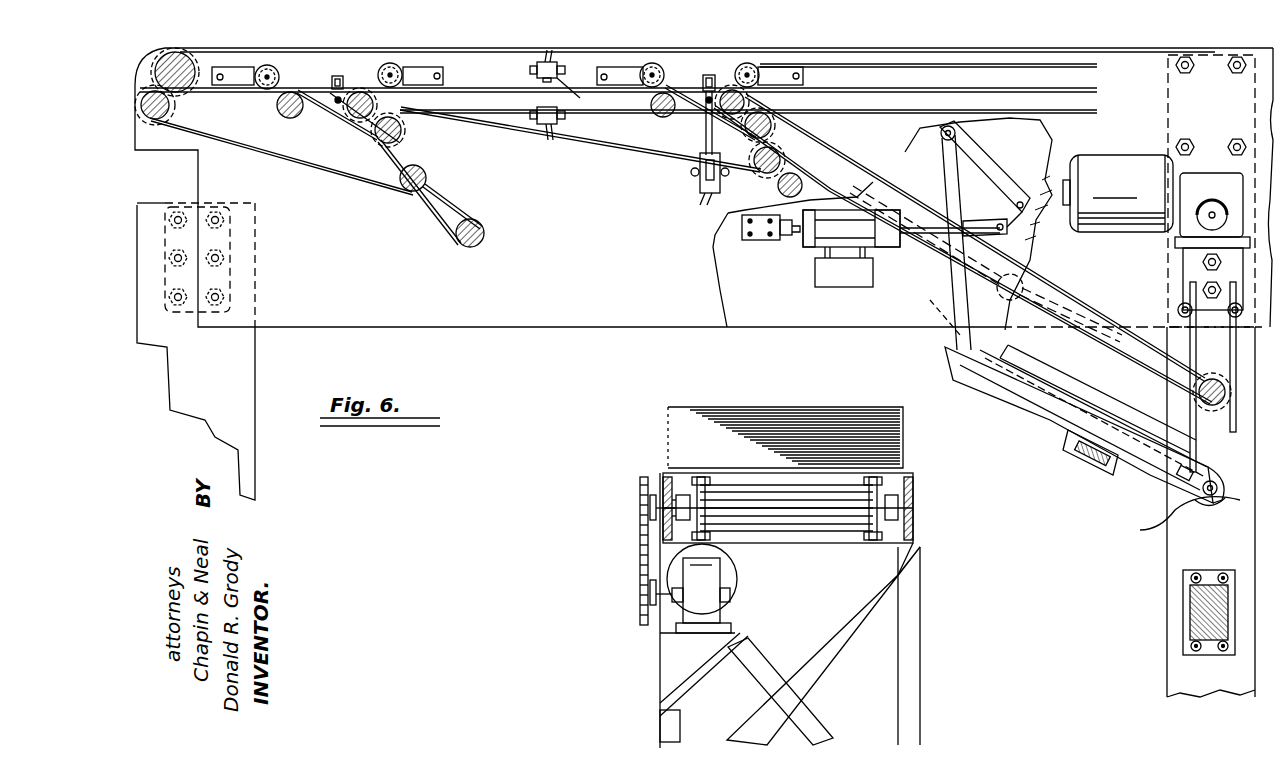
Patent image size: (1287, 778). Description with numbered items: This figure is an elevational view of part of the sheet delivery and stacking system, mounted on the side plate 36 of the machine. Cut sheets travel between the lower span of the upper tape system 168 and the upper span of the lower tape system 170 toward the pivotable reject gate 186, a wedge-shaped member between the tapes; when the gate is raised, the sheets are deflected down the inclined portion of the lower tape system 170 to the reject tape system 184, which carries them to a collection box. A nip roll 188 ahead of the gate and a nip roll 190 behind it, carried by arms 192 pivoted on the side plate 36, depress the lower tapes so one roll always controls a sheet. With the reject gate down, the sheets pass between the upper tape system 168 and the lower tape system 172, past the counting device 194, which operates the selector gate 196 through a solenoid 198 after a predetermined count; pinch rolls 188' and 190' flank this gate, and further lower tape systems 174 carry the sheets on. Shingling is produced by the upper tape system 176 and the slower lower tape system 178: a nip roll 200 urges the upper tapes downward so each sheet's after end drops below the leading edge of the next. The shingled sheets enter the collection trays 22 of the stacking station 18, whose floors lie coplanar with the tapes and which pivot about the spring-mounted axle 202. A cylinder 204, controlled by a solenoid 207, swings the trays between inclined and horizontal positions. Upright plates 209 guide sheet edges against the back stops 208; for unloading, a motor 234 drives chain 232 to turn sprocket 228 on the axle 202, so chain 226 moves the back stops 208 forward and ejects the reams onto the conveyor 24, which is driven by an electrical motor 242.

The delivery tray assembly 18 is at (1115, 512).
The collection trays 22 is at (1220, 425).
The conveyor 24 is at (615, 503).
The side plate 36 is at (567, 273).
The upper tape system 168 is at (497, 72).
The lower tape system 170 is at (345, 158).
The lower tape system 172 is at (518, 124).
The lower tape system 174 is at (862, 98).
The upper tape system 176 is at (1058, 290).
The lower tape system 178 is at (945, 283).
The reject tape system 184 is at (462, 217).
The reject gate 186 is at (325, 98).
The nip roll 188 is at (291, 50).
The pinch roll 188' is at (658, 48).
The nip roll 190 is at (404, 49).
The pinch roll 190' is at (782, 48).
The arms 192 is at (252, 68).
The counting device 194 is at (579, 95).
The selector gate 196 is at (695, 90).
The solenoid 198 is at (699, 186).
The nip roll 200 is at (880, 212).
The axle 202 is at (1218, 495).
The cylinder 204 is at (803, 248).
The solenoid 207 is at (835, 287).
The back stops 208 is at (1170, 412).
The upright plates 209 is at (1085, 358).
The chain 226 is at (1042, 415).
The sprocket 228 is at (1188, 493).
The chain 232 is at (1182, 326).
The motor 234 is at (1146, 158).
The electrical motor 242 is at (730, 580).